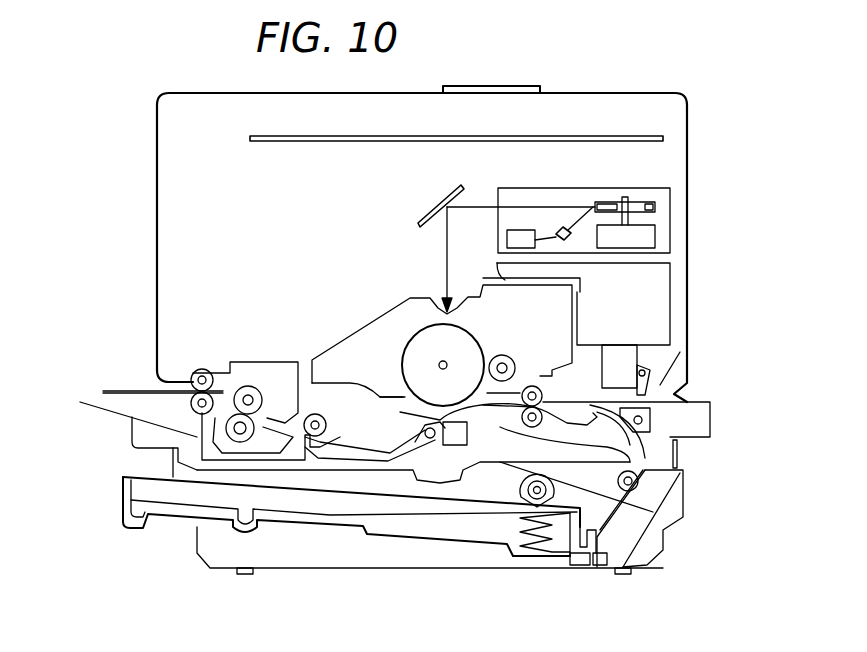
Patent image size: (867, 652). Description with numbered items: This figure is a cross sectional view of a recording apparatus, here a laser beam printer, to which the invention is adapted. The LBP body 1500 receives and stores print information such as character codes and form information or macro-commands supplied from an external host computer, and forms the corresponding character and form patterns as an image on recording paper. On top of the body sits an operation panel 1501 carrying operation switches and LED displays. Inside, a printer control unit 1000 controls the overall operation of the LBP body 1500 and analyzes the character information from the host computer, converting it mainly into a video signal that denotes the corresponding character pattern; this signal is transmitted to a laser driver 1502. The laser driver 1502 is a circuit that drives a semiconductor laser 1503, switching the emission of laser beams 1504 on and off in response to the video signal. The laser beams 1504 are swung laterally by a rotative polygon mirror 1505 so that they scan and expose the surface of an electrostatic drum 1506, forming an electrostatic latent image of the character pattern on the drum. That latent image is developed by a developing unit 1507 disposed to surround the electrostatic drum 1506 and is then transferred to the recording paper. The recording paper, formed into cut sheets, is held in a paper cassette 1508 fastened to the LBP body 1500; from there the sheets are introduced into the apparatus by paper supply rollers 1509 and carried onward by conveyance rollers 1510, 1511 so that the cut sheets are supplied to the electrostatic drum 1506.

The printer control unit 1000 is at (665, 137).
The LBP body 1500 is at (638, 90).
The operation panel 1501 is at (523, 85).
The laser driver 1502 is at (498, 242).
The semiconductor laser 1503 is at (567, 240).
The laser beams 1504 is at (572, 206).
The rotative polygon mirror 1505 is at (657, 205).
The electrostatic drum 1506 is at (412, 332).
The developing unit 1507 is at (347, 348).
The paper cassette 1508 is at (122, 513).
The paper supply rollers 1509 is at (522, 494).
The conveyance rollers 1510 is at (637, 490).
The conveyance rollers 1511 is at (657, 458).